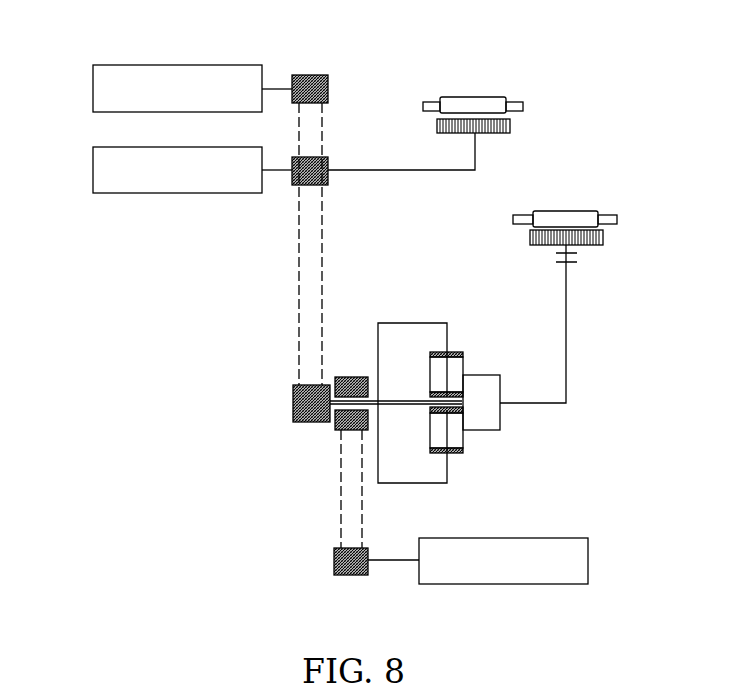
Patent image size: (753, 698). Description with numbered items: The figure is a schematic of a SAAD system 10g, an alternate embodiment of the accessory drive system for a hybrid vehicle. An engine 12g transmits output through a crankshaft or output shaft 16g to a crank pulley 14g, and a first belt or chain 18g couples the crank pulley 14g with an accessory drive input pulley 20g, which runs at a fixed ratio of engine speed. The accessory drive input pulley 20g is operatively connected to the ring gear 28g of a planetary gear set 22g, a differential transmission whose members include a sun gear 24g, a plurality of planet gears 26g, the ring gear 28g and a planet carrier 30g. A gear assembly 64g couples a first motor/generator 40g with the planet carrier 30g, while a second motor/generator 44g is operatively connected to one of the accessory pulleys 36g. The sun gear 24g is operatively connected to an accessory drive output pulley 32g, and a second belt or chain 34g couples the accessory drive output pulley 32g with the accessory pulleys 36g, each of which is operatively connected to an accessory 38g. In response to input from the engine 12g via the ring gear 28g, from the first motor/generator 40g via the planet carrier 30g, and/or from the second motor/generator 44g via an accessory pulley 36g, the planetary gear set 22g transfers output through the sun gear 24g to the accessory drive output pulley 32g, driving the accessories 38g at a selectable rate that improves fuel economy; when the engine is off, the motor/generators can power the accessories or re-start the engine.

The SAAD system 10g is at (650, 88).
The engine 12g is at (553, 584).
The crank pulley 14g is at (348, 577).
The output shaft 16g is at (383, 562).
The first belt or chain 18g is at (340, 507).
The accessory drive input pulley 20g is at (362, 377).
The planetary gear set 22g is at (494, 471).
The sun gear 24g is at (426, 391).
The planet gears 26g is at (453, 373).
The ring gear 28g is at (453, 352).
The planet carrier 30g is at (490, 433).
The accessory drive output pulley 32g is at (293, 390).
The second belt or chain 34g is at (297, 291).
The accessory pulleys 36g is at (315, 75).
The accessories 38g is at (103, 65).
The first motor/generator 40g is at (583, 209).
The second motor/generator 44g is at (490, 97).
The gear assembly 64g is at (581, 268).